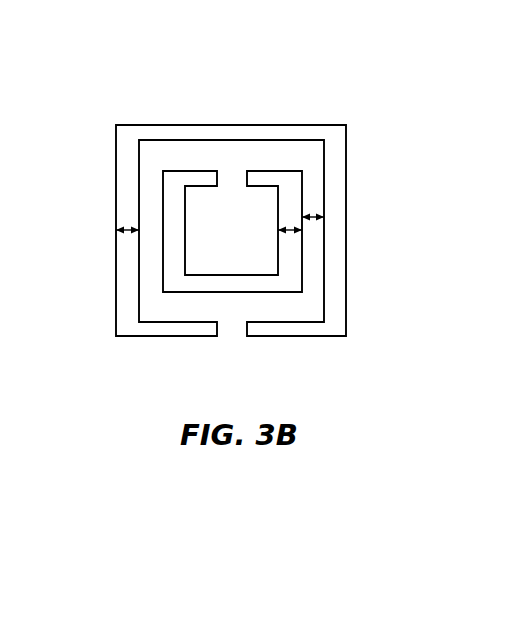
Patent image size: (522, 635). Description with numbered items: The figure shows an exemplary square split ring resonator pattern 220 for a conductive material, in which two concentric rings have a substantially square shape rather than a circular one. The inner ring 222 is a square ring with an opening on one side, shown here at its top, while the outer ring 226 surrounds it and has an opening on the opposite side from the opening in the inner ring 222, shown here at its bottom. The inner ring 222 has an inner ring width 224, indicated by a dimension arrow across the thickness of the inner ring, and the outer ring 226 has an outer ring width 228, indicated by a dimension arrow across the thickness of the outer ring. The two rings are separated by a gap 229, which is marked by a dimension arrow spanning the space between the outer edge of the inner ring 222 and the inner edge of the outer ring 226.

The square split ring resonator pattern 220 is at (134, 71).
The inner ring 222 is at (302, 268).
The inner ring width 224 is at (290, 232).
The outer ring 226 is at (116, 185).
The outer ring width 228 is at (118, 232).
The gap 229 is at (312, 212).